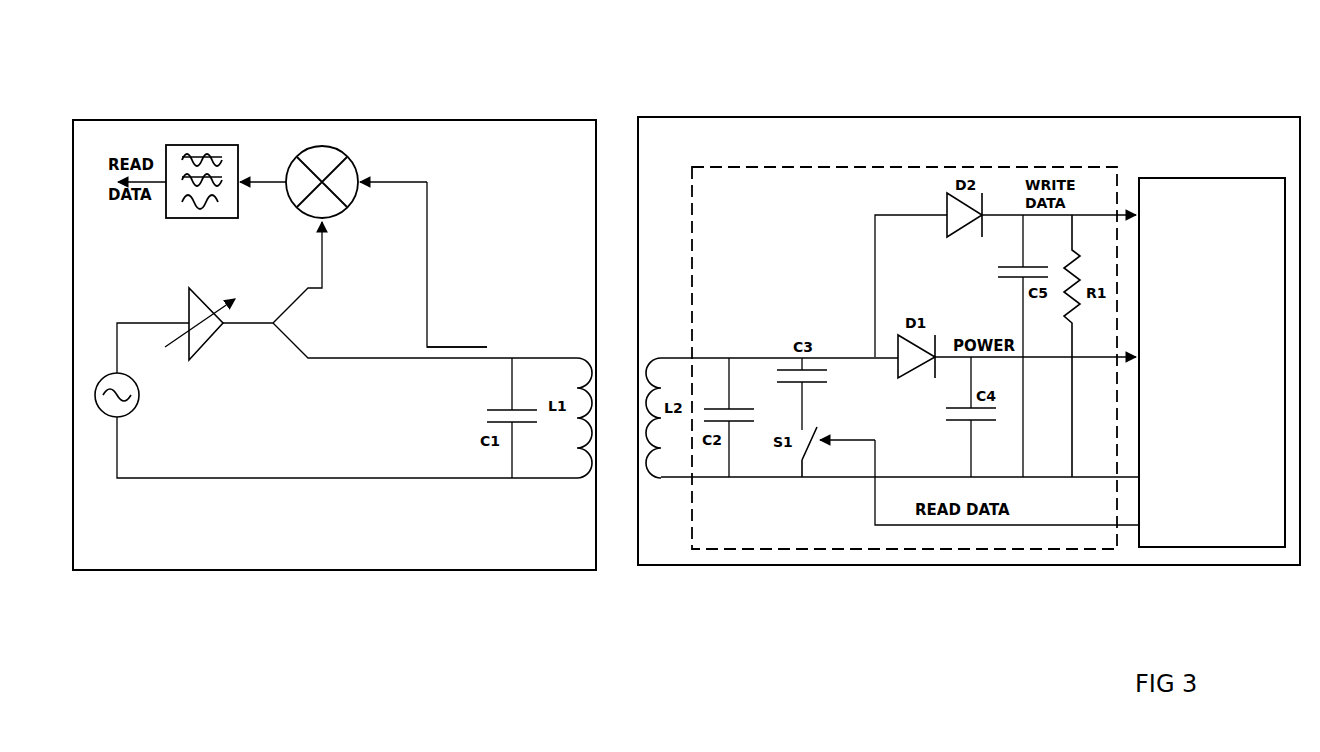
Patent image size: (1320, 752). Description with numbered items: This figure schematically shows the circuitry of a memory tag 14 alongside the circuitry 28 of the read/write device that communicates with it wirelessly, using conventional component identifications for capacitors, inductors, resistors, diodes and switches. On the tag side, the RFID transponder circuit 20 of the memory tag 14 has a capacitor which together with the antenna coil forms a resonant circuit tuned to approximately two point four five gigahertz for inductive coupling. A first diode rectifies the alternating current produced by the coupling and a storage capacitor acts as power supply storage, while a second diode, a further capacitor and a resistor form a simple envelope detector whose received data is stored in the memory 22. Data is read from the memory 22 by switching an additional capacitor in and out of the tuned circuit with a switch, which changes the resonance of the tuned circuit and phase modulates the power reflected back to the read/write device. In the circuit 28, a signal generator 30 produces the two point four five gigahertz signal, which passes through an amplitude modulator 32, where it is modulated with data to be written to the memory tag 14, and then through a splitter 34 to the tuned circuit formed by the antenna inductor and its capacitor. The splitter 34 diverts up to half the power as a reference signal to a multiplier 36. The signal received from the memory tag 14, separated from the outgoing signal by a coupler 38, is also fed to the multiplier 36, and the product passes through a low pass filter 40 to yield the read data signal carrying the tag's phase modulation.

The memory tag 14 is at (1194, 98).
The RFID transponder circuit 20 is at (992, 549).
The memory 22 is at (1212, 362).
The circuitry of the read/write device 28 is at (490, 117).
The signal generator 30 is at (116, 420).
The amplitude modulator 32 is at (189, 298).
The splitter 34 is at (296, 298).
The multiplier 36 is at (315, 165).
The coupler 38 is at (452, 352).
The low pass filter 40 is at (204, 160).